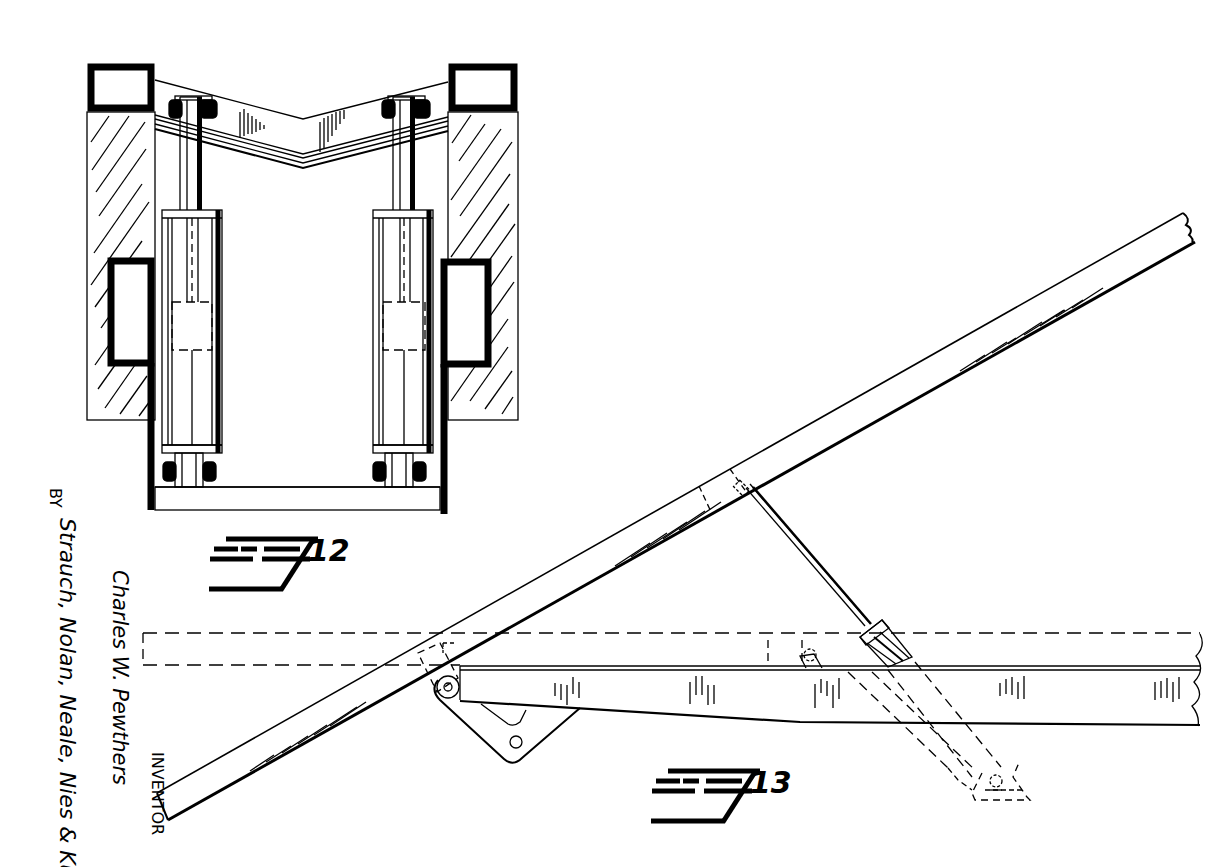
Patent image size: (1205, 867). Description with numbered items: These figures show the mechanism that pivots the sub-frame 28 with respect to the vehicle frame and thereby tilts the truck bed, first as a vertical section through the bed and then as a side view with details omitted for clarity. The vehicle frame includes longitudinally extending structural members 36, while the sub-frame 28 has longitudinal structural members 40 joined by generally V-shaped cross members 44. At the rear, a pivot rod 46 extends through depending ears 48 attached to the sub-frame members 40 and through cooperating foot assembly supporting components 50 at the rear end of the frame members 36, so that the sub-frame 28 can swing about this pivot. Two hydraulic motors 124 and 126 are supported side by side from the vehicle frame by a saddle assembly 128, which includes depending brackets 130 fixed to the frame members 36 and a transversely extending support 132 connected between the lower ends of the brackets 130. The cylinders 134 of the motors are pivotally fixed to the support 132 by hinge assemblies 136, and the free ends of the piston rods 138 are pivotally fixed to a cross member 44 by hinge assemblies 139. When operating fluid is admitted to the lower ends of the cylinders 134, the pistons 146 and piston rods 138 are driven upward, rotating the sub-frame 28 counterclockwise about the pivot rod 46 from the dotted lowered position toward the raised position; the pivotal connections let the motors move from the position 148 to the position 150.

In FIG. 13, the sub-frame 28 is at (692, 484).
In FIG. 12, the longitudinally extending structural members 36 is at (115, 318).
In FIG. 13, the longitudinally extending structural members 36 is at (690, 716).
In FIG. 12, the longitudinal structural members 40 is at (87, 80).
In FIG. 12, the V-shaped cross members 44 is at (270, 110).
In FIG. 13, the pivot rod 46 is at (437, 690).
In FIG. 13, the depending ears 48 is at (425, 650).
In FIG. 13, the foot assembly supporting components 50 is at (478, 733).
In FIG. 12, the hydraulic motor 124 is at (224, 297).
In FIG. 12, the hydraulic motor 126 is at (370, 360).
In FIG. 12, the saddle assembly 128 is at (147, 497).
In FIG. 13, the saddle assembly 128 is at (1015, 772).
In FIG. 12, the depending brackets 130 is at (147, 460).
In FIG. 12, the transversely extending support 132 is at (305, 487).
In FIG. 12, the cylinder 134 is at (373, 402).
In FIG. 13, the cylinder 134 is at (860, 632).
In FIG. 12, the hinge assemblies 136 is at (372, 468).
In FIG. 13, the hinge assemblies 136 is at (1005, 802).
In FIG. 12, the piston rods 138 is at (203, 185).
In FIG. 13, the piston rods 138 is at (775, 516).
In FIG. 12, the hinge assemblies 139 is at (199, 96).
In FIG. 13, the hinge assemblies 139 is at (738, 470).
In FIG. 12, the pistons 146 is at (212, 320).
In FIG. 13, the lowered motor position 148 is at (912, 740).
In FIG. 13, the raised motor position 150 is at (900, 634).